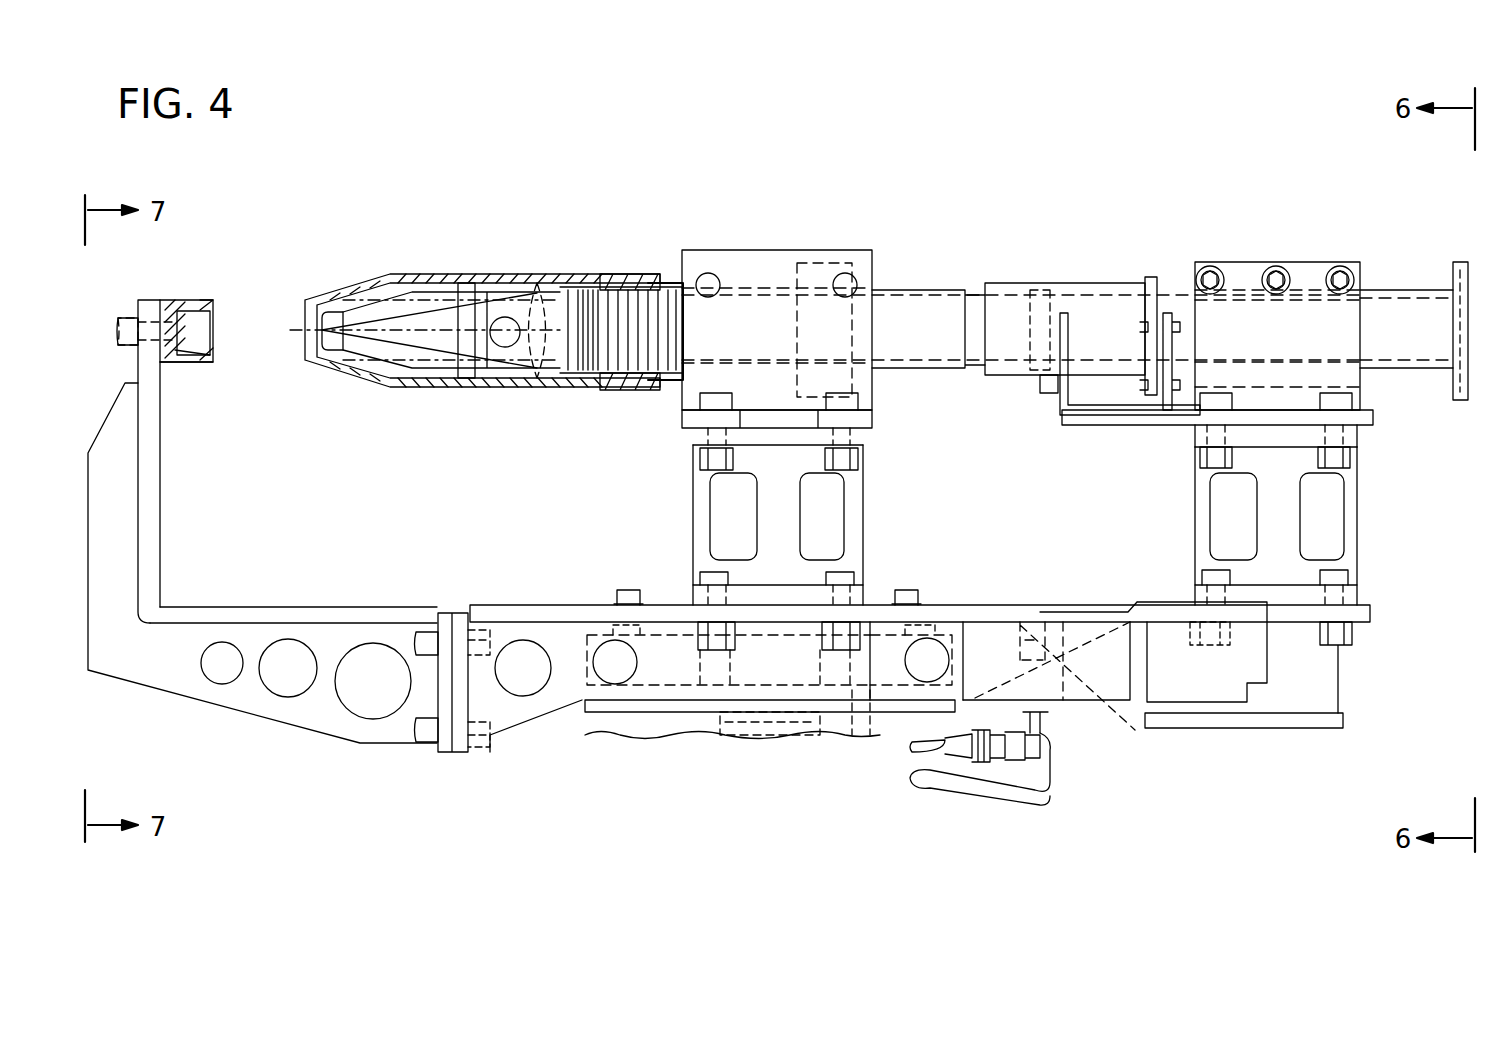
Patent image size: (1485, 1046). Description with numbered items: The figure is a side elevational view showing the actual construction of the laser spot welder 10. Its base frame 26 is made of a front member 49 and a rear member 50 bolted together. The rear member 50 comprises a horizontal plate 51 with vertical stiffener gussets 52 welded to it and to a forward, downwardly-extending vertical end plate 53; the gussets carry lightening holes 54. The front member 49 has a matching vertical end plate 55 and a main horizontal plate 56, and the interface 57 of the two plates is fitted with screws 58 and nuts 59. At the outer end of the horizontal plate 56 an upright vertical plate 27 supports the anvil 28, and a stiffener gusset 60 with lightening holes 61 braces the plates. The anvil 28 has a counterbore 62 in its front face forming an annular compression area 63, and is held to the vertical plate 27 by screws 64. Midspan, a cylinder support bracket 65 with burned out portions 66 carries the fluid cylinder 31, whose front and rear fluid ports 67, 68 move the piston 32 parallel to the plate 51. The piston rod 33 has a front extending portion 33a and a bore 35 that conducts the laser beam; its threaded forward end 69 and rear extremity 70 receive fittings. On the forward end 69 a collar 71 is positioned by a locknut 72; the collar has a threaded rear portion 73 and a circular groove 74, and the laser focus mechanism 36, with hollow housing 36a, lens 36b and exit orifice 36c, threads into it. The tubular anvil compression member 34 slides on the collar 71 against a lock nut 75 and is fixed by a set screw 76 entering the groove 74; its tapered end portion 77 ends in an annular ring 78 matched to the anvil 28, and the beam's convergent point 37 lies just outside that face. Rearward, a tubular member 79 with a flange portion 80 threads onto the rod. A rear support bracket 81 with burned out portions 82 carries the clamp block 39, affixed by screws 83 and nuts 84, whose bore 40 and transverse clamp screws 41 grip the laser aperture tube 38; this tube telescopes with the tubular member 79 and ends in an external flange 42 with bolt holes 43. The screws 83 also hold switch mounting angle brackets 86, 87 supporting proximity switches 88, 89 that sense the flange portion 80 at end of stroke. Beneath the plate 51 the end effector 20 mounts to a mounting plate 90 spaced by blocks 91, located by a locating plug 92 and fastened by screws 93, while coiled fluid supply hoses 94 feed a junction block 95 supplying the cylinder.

The laser spot welder 10 is at (881, 162).
The end effector 20 is at (690, 722).
The base frame 26 is at (508, 598).
The upwardly-extending vertical plate 27 is at (160, 540).
The anvil 28 is at (208, 300).
The fluid cylinder 31 is at (857, 246).
The piston 32 is at (868, 383).
The piston rod 33 is at (748, 370).
The front extending portion of piston rod 33a is at (752, 282).
The tubular anvil compression member 34 is at (460, 270).
The bore 35 is at (930, 368).
The laser focus mechanism 36 is at (530, 380).
The hollow housing 36a is at (385, 360).
The lens 36b is at (545, 395).
The orifice 36c is at (335, 340).
The convergent point 37 is at (310, 330).
The laser aperture tube 38 is at (1418, 288).
The clamp block 39 is at (1298, 250).
The bore 40 is at (1246, 296).
The transverse clamp screws 41 is at (1284, 266).
The external flange 42 is at (1441, 315).
The bolt holes 43 is at (1460, 385).
The front member 49 is at (390, 748).
The rear member 50 is at (520, 732).
The horizontal plate 51 is at (606, 605).
The vertical stiffener gussets 52 is at (709, 652).
The vertical end plate 53 is at (468, 752).
The lightening holes 54 is at (504, 658).
The vertical end plate 55 is at (446, 750).
The main horizontal plate 56 is at (362, 605).
The interface 57 is at (458, 752).
The screws 58 is at (430, 648).
The nuts 59 is at (470, 625).
The stiffener gusset 60 is at (137, 670).
The lightening holes 61 is at (346, 696).
The counterbore 62 is at (212, 318).
The annular compression area 63 is at (213, 360).
The screws 64 is at (130, 338).
The cylinder support bracket 65 is at (864, 527).
The burned out portions 66 is at (806, 502).
The front fluid port 67 is at (712, 270).
The rear fluid port 68 is at (858, 283).
The forward end of piston rod 69 is at (625, 388).
The rear extremity of piston rod 70 is at (1002, 378).
The collar 71 is at (568, 380).
The locknut 72 is at (665, 275).
The rear portion of collar 73 is at (618, 280).
The circular groove 74 is at (596, 290).
The lock nut 75 is at (648, 385).
The set screw 76 is at (605, 283).
The converging tapered end portion 77 is at (392, 272).
The annular ring 78 is at (320, 362).
The tubular member 79 is at (1048, 290).
The flange portion 80 is at (1150, 277).
The rear support bracket 81 is at (1360, 513).
The burned out portions 82 is at (1334, 500).
The screws 83 is at (1345, 398).
The nuts 84 is at (1358, 458).
The switch mounting angle bracket 86 is at (1120, 415).
The switch mounting angle bracket 87 is at (1185, 410).
The proximity switch 88 is at (1052, 395).
The proximity switch 89 is at (1148, 420).
The mounting plate 90 is at (638, 712).
The blocks 91 is at (870, 672).
The locating plug 92 is at (840, 745).
The screws 93 is at (870, 745).
The coiled fluid supply hoses 94 is at (932, 790).
The junction block 95 is at (1130, 725).